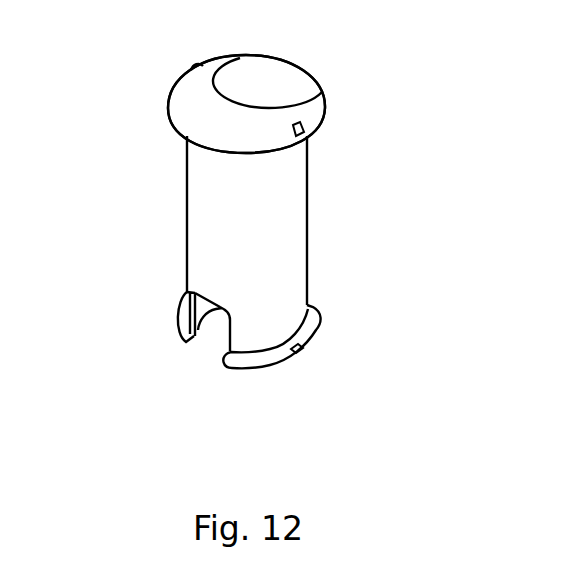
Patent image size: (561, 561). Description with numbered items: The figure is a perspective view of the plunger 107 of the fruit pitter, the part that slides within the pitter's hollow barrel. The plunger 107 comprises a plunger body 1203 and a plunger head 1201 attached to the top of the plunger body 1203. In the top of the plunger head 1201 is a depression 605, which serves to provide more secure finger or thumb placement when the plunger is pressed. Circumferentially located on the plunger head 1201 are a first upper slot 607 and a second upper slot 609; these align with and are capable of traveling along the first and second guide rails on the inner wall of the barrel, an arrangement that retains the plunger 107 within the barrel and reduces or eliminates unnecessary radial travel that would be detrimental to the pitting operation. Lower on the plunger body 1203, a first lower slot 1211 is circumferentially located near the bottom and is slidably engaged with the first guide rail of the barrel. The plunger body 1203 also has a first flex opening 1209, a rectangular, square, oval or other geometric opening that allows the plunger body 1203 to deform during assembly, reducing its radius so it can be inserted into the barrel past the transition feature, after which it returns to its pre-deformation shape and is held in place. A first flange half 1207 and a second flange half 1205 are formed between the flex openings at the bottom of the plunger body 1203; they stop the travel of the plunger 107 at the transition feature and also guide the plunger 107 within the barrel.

The plunger 107 is at (323, 105).
The depression 605 is at (265, 72).
The first upper slot 607 is at (195, 68).
The second upper slot 609 is at (308, 135).
The plunger head 1201 is at (168, 110).
The plunger body 1203 is at (308, 240).
The second flange half 1205 is at (177, 313).
The first flange half 1207 is at (260, 367).
The first flex opening 1209 is at (215, 340).
The first lower slot 1211 is at (303, 353).